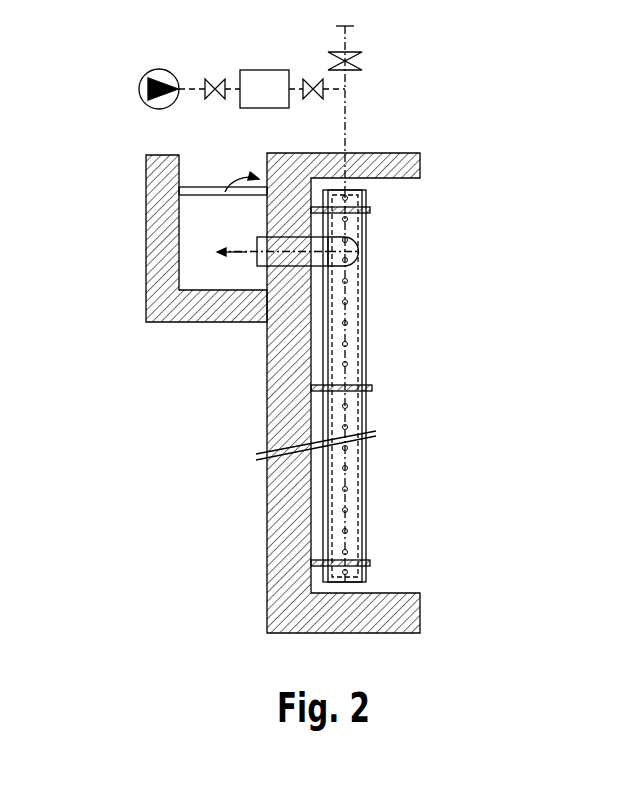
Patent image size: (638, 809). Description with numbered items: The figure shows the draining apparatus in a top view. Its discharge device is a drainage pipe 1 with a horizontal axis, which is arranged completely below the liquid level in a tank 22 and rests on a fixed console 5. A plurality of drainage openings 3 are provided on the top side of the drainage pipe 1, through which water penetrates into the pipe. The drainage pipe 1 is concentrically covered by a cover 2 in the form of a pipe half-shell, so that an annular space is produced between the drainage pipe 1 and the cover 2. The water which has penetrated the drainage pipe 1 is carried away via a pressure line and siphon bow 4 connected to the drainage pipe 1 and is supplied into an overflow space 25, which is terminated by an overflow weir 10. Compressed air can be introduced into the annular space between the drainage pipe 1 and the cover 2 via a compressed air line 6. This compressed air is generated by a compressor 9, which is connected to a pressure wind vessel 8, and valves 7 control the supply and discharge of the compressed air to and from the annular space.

The drainage pipe 1 is at (361, 315).
The cover 2 is at (368, 273).
The drainage openings 3 is at (350, 363).
The pressure line and siphon bow 4 is at (257, 268).
The console 5 is at (372, 388).
The compressed air line 6 is at (347, 112).
The valves 7 is at (348, 68).
The pressure wind vessel 8 is at (263, 70).
The compressor 9 is at (172, 74).
The overflow weir 10 is at (225, 196).
The tank 22 is at (402, 197).
The overflow space 25 is at (192, 259).